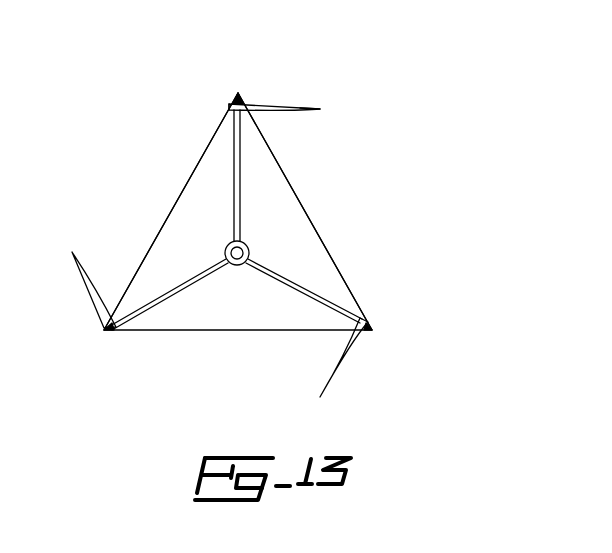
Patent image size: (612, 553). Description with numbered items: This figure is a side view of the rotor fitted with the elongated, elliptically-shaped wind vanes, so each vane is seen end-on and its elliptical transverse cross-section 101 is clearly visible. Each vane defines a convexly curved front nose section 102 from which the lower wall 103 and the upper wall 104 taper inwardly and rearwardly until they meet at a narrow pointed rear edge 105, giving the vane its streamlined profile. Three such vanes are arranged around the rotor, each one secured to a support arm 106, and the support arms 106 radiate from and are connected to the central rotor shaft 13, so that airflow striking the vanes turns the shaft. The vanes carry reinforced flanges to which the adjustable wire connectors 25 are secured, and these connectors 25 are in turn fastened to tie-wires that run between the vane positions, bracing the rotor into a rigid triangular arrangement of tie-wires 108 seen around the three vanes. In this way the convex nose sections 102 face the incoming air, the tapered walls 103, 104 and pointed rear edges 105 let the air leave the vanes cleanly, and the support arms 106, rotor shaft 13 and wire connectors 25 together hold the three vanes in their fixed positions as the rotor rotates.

The convexly curved front nose section 102 is at (208, 113).
The upper wall 104 is at (257, 104).
The elliptical transverse cross-section 101 is at (272, 104).
The narrow pointed rear edge 105 is at (295, 109).
The lower wall 103 is at (303, 116).
The support arm 106 is at (241, 203).
The rotor shaft 13 is at (239, 265).
The frame side member 108 is at (155, 232).
The adjustable wire connector 25 is at (108, 331).